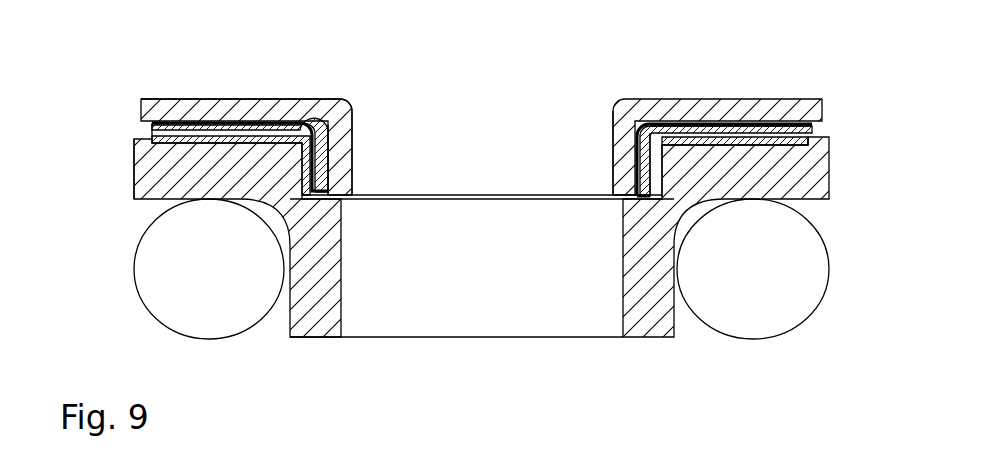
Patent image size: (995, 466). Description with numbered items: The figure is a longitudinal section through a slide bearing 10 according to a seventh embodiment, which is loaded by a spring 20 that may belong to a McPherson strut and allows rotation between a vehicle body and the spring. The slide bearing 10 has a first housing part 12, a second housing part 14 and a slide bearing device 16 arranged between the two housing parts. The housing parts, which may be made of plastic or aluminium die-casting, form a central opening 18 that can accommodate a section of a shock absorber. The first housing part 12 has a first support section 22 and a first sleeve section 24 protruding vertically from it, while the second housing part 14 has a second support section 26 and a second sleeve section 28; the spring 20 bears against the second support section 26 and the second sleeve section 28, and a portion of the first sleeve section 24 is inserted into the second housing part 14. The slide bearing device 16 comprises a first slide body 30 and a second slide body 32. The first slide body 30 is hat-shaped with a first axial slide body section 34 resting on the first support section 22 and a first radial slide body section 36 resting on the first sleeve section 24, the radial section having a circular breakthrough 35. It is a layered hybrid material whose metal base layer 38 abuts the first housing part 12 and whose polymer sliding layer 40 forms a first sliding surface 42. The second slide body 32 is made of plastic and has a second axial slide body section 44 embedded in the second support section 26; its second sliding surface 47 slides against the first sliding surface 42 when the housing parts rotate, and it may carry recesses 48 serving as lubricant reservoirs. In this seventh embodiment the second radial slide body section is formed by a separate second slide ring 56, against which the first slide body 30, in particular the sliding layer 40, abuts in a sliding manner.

The slide bearing 10 is at (668, 83).
The first housing part 12 is at (622, 107).
The second housing part 14 is at (330, 247).
The slide bearing device 16 is at (134, 129).
The central opening 18 is at (607, 310).
The spring 20 is at (788, 318).
The first support section 22 is at (160, 105).
The first sleeve section 24 is at (344, 154).
The second support section 26 is at (134, 199).
The second sleeve section 28 is at (330, 300).
The first slide body 30 is at (264, 115).
The second slide body 32 is at (247, 140).
The first axial slide body section 34 is at (277, 130).
The circular breakthrough 35 is at (332, 174).
The first radial slide body section 36 is at (350, 122).
The base layer 38 is at (315, 122).
The sliding layer 40 is at (728, 130).
The first sliding surface 42 is at (793, 133).
The second axial slide body section 44 is at (700, 143).
The second sliding surface 47 is at (808, 143).
The recess 48 is at (777, 127).
The second slide ring 56 is at (657, 175).